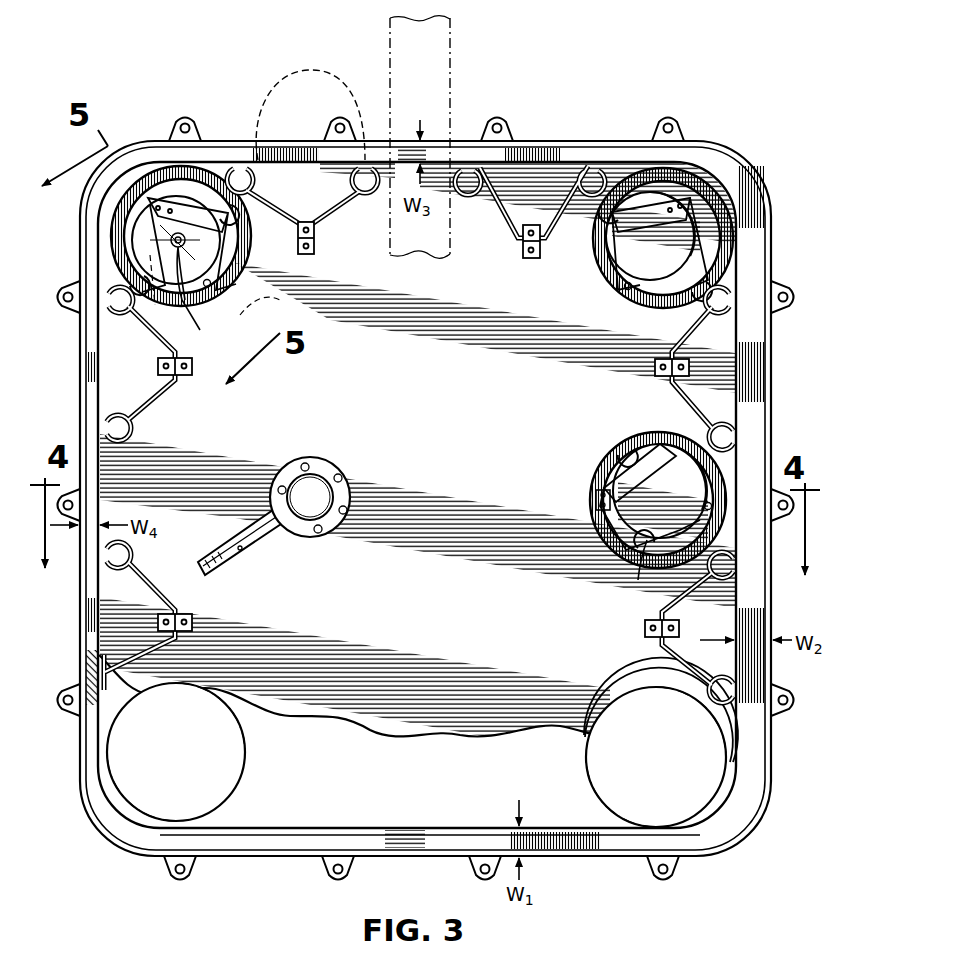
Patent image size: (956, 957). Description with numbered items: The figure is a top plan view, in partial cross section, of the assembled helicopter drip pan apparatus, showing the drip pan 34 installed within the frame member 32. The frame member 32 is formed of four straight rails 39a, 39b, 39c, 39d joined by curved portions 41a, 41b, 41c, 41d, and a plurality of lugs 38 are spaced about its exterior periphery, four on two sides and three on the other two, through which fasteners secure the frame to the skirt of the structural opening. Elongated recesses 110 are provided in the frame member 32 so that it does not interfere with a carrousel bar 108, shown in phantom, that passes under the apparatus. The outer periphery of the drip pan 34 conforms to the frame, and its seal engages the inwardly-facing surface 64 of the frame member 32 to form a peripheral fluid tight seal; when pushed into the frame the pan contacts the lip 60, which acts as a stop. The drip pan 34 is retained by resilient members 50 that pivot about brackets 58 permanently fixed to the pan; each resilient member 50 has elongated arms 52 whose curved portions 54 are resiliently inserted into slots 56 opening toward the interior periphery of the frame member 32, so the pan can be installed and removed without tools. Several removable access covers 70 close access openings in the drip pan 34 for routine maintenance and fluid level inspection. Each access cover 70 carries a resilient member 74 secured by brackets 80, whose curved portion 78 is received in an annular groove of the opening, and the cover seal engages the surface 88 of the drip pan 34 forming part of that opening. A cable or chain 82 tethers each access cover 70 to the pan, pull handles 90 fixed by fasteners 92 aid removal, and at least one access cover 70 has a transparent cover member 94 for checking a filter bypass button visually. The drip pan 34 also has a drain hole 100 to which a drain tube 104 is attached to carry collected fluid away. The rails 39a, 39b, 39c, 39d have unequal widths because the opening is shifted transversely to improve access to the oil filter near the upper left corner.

The frame member 32 is at (458, 826).
The drip pan 34 is at (327, 703).
The lugs 38 is at (688, 128).
The rail 39a is at (752, 385).
The rail 39b is at (560, 160).
The rail 39c is at (108, 487).
The rail 39d is at (263, 842).
The curved portion 41a is at (750, 170).
The curved portion 41b is at (120, 150).
The curved portion 41c is at (105, 840).
The curved portion 41d is at (750, 835).
The resilient members 50 is at (336, 222).
The elongated arms 52 is at (505, 238).
The curved portions 54 is at (348, 198).
The slots 56 is at (283, 79).
The brackets 58 is at (308, 256).
The lip 60 is at (200, 822).
The inwardly-facing surface 64 is at (272, 828).
The access covers 70 is at (195, 172).
The resilient member 74 is at (638, 185).
The curved portion 78 is at (266, 200).
The brackets 80 is at (592, 497).
The cable or chain 82 is at (255, 306).
The surface 88 is at (193, 305).
The pull handles 90 is at (215, 240).
The fasteners 92 is at (622, 292).
The transparent cover member 94 is at (155, 235).
The drain hole 100 is at (295, 527).
The drain tube 104 is at (250, 550).
The carrousel bar 108 is at (450, 35).
The elongated recesses 110 is at (425, 150).